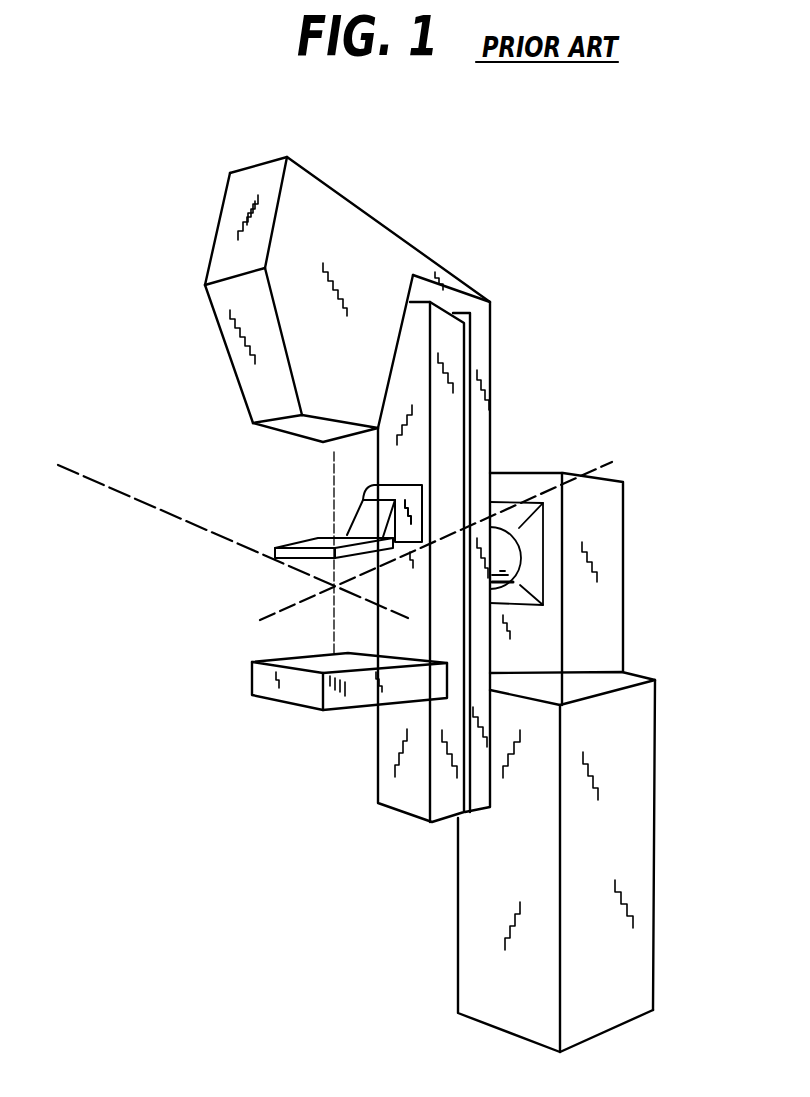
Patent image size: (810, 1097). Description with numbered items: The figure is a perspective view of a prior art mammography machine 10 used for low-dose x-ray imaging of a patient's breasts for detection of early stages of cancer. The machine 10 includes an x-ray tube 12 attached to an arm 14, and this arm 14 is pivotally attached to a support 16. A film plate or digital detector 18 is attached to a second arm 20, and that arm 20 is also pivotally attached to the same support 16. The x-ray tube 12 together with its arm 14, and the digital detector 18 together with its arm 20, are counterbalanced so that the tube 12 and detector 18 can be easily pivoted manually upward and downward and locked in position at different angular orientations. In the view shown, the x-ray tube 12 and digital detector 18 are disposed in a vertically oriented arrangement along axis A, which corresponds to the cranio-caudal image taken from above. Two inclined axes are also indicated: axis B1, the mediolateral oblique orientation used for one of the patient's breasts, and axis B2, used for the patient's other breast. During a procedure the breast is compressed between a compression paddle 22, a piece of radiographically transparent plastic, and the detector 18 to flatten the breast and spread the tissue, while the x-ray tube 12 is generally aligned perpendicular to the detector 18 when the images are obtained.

The mammography machine 10 is at (589, 284).
The x-ray tube 12 is at (235, 215).
The arm 14 is at (455, 283).
The support 16 is at (638, 766).
The film plate or digital detector 18 is at (290, 692).
The arm 20 is at (402, 778).
The compression paddle 22 is at (308, 542).
The axis A is at (332, 465).
The axis B1 is at (103, 480).
The axis B2 is at (600, 465).